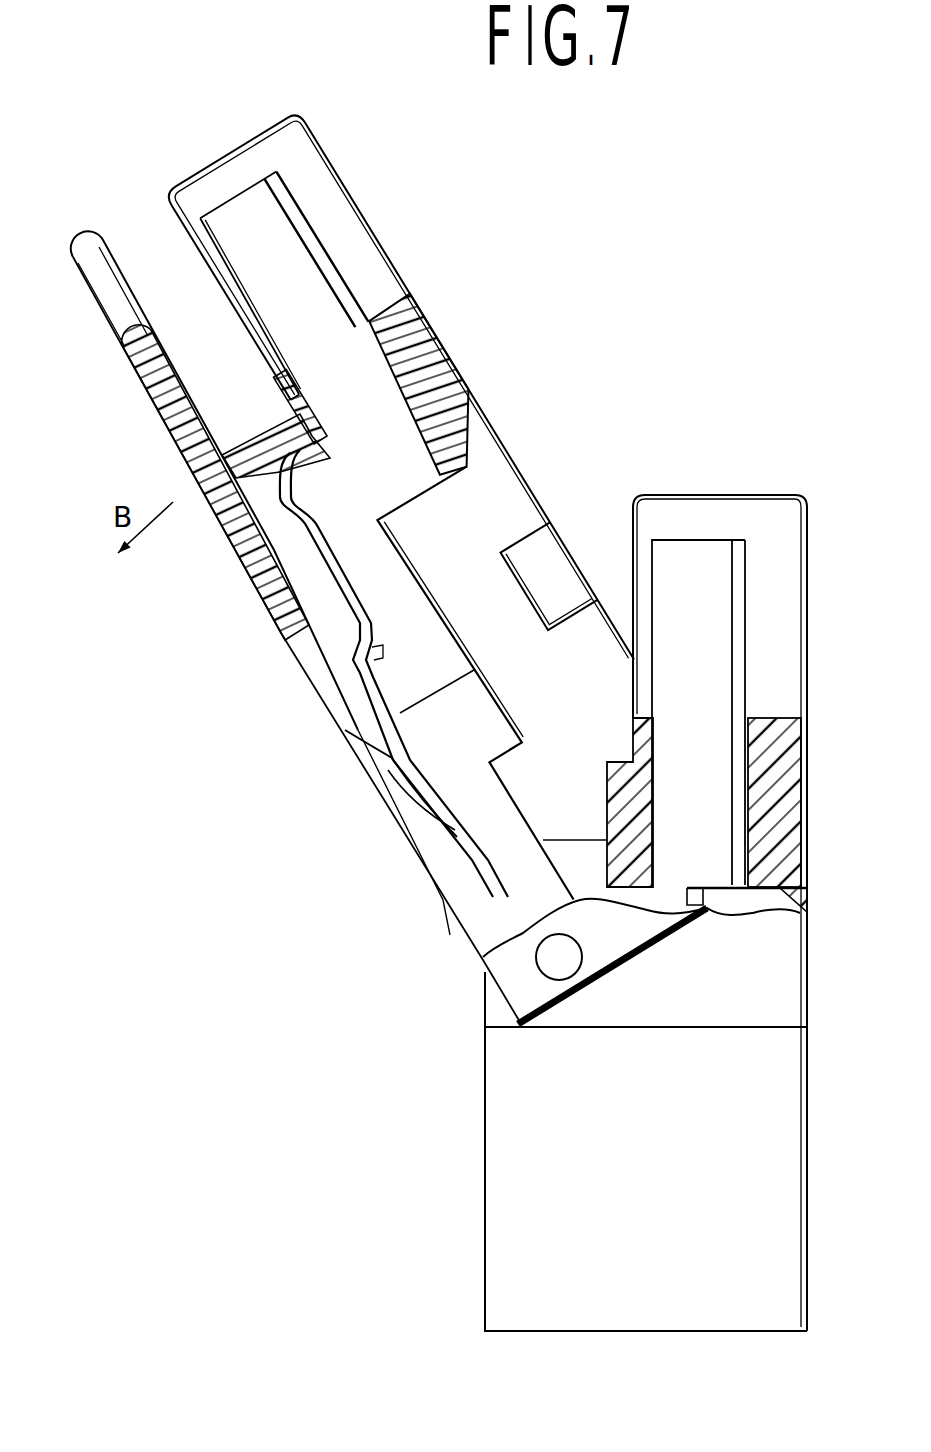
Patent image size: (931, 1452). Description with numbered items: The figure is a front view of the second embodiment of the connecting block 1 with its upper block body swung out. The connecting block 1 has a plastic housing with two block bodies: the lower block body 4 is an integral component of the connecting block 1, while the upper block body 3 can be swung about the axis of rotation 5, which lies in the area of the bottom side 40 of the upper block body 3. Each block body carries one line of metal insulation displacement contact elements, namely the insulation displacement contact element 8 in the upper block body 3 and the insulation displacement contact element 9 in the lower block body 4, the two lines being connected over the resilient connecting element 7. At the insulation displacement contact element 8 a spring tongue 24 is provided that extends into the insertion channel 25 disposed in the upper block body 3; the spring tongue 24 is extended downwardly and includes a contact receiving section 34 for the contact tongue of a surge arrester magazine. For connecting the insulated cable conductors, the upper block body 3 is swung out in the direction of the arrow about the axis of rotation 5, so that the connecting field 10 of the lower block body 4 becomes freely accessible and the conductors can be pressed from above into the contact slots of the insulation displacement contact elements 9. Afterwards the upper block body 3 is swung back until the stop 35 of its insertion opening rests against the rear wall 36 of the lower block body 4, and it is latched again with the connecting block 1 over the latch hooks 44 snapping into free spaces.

The connecting block 1 is at (553, 430).
The upper block body 3 is at (428, 340).
The lower block body 4 is at (795, 798).
The axis of rotation 5 is at (553, 960).
The resilient connecting element 7 is at (497, 890).
The insulation displacement contact element 8 is at (303, 263).
The insulation displacement contact element 9 is at (722, 668).
The connecting field 10 is at (742, 497).
The spring tongue 24 is at (292, 568).
The insertion channel 25 is at (313, 537).
The contact receiving section 34 is at (400, 815).
The stop 35 is at (488, 712).
The rear wall 36 is at (637, 755).
The bottom side 40 is at (592, 968).
The latch hooks 44 is at (522, 552).